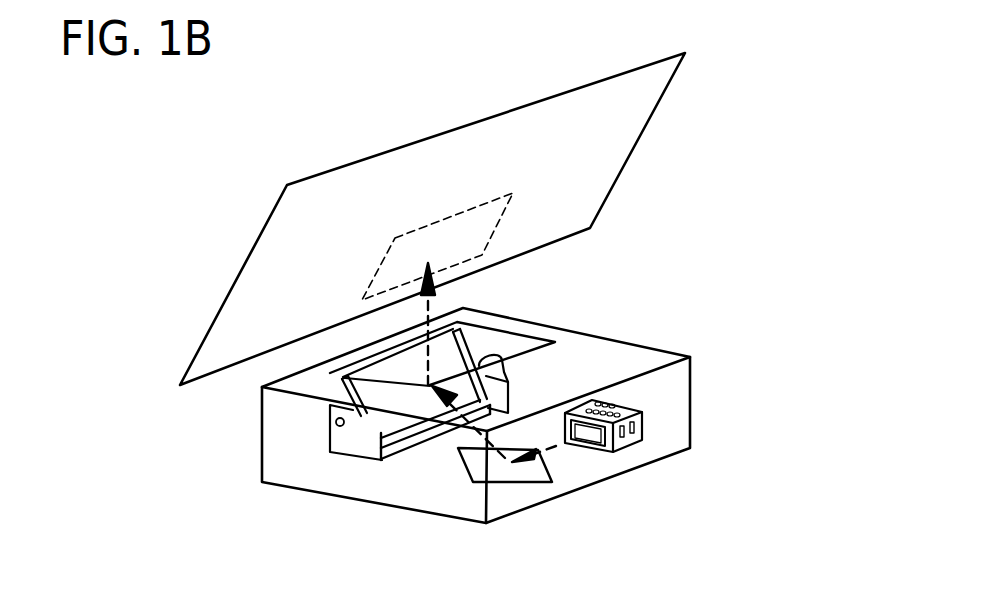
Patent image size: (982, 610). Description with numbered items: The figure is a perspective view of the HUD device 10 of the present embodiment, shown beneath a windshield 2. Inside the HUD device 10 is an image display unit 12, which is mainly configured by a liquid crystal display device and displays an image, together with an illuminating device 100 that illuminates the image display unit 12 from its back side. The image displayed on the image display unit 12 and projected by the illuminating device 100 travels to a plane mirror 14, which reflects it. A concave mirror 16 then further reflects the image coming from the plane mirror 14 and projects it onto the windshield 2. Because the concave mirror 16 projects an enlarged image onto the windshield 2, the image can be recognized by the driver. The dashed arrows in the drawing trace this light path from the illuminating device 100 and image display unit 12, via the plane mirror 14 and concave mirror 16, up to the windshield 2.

The windshield 2 is at (633, 150).
The HUD device 10 is at (610, 333).
The image display unit 12 is at (597, 445).
The plane mirror 14 is at (523, 483).
The concave mirror 16 is at (410, 438).
The illuminating device 100 is at (640, 440).